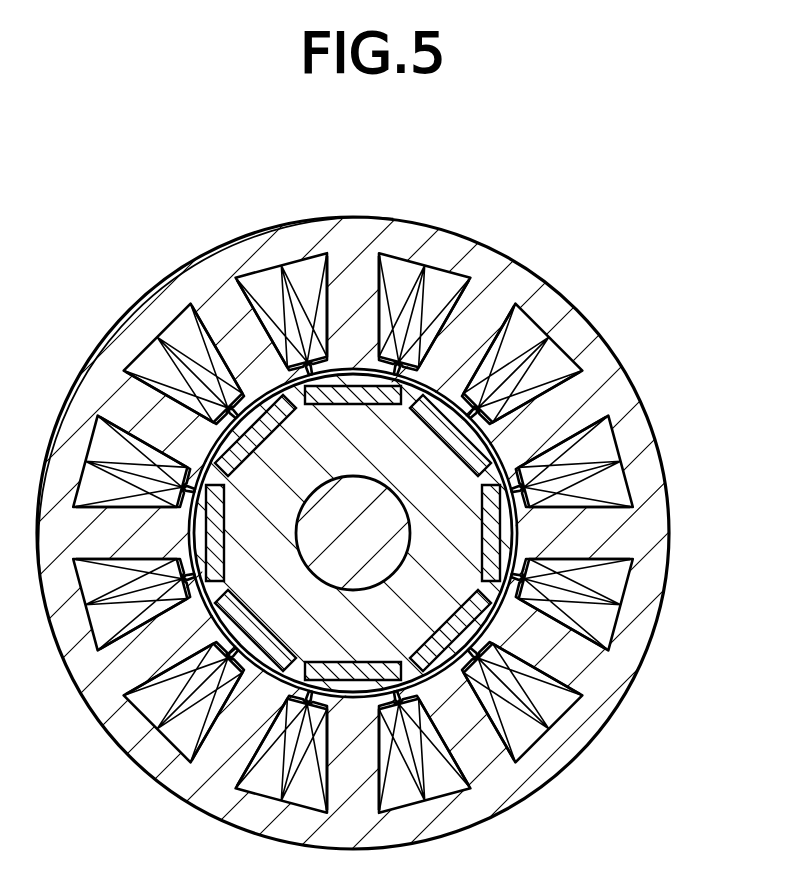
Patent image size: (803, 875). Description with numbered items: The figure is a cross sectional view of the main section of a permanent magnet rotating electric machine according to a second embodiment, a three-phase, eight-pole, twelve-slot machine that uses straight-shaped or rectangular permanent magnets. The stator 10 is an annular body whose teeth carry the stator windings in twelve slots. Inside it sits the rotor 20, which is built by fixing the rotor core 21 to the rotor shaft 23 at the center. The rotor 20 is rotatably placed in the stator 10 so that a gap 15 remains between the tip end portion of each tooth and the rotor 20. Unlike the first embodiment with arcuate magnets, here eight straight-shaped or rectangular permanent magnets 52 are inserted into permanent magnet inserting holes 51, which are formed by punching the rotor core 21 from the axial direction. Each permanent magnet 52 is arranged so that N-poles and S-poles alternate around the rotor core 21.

The stator 10 is at (668, 603).
The gap 15 is at (596, 663).
The rotor 20 is at (432, 392).
The rotor core 21 is at (273, 464).
The rotor shaft 23 is at (360, 582).
The permanent magnet inserting holes 51 is at (503, 537).
The permanent magnets 52 is at (474, 458).